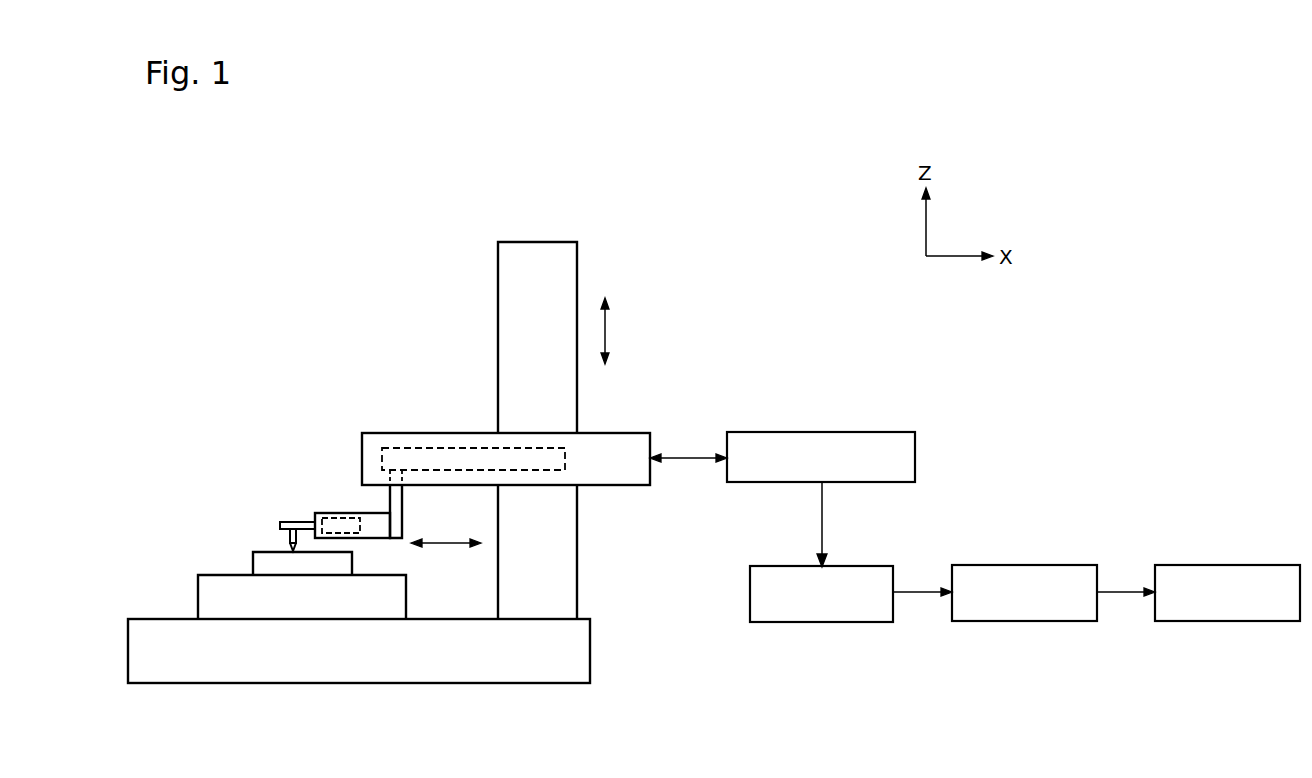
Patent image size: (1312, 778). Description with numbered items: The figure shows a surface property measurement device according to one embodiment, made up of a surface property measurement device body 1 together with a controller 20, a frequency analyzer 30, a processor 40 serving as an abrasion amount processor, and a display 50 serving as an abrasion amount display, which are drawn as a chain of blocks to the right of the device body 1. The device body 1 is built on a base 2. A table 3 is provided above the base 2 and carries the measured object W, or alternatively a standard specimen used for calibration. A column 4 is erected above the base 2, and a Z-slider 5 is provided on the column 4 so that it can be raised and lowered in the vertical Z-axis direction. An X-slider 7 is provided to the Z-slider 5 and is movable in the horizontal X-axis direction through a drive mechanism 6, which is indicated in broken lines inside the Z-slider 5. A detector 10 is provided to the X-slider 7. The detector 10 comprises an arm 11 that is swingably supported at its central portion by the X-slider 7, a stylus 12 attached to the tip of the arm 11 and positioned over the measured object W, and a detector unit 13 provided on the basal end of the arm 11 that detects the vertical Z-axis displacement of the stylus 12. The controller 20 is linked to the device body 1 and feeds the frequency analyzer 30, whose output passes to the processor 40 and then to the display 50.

The surface property measurement device body 1 is at (425, 230).
The base 2 is at (348, 684).
The table 3 is at (198, 596).
The column 4 is at (557, 242).
The Z-slider 5 is at (613, 433).
The drive mechanism 6 is at (445, 448).
The X-slider 7 is at (402, 512).
The detector 10 is at (306, 479).
The arm 11 is at (293, 522).
The stylus 12 is at (261, 500).
The detector unit 13 is at (337, 515).
The measured object W is at (253, 560).
The controller 20 is at (880, 432).
The frequency analyzer 30 is at (848, 622).
The processor 40 is at (1058, 622).
The display 50 is at (1262, 622).